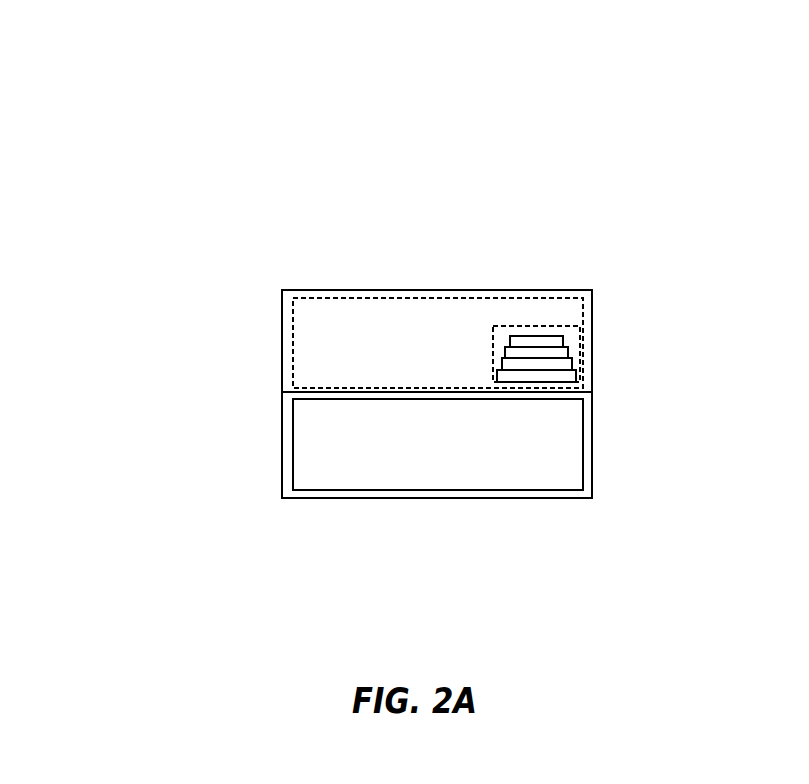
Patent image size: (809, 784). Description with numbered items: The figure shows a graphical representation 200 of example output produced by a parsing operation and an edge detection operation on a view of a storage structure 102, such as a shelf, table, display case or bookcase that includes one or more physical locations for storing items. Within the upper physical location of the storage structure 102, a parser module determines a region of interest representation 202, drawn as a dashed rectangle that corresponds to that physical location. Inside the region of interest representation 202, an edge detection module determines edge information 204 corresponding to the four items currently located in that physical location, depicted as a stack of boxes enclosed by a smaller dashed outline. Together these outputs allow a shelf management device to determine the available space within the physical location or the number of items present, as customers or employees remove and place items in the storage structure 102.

The graphical representation 200 is at (630, 86).
The storage structure 102 is at (158, 190).
The region of interest representation 202 is at (295, 382).
The edge information 204 is at (582, 324).